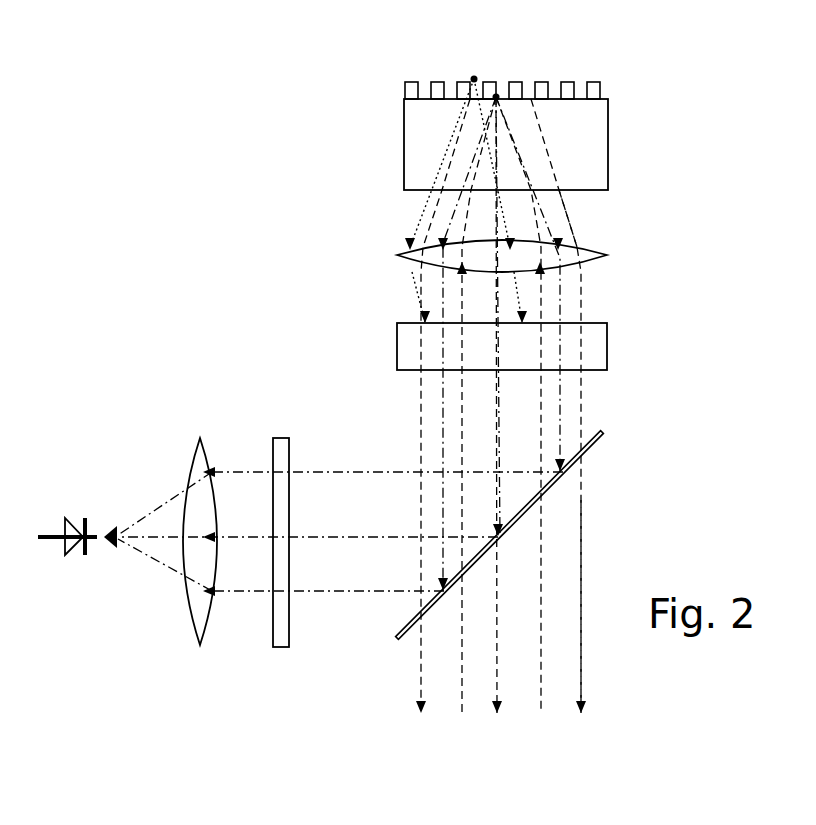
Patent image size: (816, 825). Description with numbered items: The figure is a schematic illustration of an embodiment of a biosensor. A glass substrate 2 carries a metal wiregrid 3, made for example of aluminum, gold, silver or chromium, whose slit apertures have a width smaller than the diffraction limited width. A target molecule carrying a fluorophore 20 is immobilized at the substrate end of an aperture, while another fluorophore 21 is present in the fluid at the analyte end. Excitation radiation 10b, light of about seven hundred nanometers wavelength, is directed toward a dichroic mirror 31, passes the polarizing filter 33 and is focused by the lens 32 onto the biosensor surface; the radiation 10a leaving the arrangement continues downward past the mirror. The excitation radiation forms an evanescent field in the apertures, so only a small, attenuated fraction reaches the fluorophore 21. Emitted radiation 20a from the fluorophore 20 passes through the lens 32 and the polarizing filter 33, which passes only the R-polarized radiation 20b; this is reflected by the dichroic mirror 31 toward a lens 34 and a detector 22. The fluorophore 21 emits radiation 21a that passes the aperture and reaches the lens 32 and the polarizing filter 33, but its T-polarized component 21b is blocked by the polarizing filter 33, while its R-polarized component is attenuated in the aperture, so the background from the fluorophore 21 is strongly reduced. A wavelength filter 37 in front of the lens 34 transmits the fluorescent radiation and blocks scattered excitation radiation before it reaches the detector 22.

The substrate 2 is at (609, 133).
The wiregrid 3 is at (600, 89).
The fluorophore 20 is at (497, 94).
The emitted radiation 20a is at (456, 212).
The R-polarized radiation 20b is at (392, 473).
The fluorophore 21 is at (473, 77).
The radiation 21a is at (472, 77).
The T-polarized component 21b is at (445, 154).
The output beam 10a is at (580, 557).
The excitation radiation 10b is at (570, 222).
The detector 22 is at (80, 553).
The dichroic mirror 31 is at (605, 438).
The lens 32 is at (608, 256).
The polarizing filter 33 is at (607, 351).
The lens 34 is at (197, 643).
The wavelength filter 37 is at (273, 638).